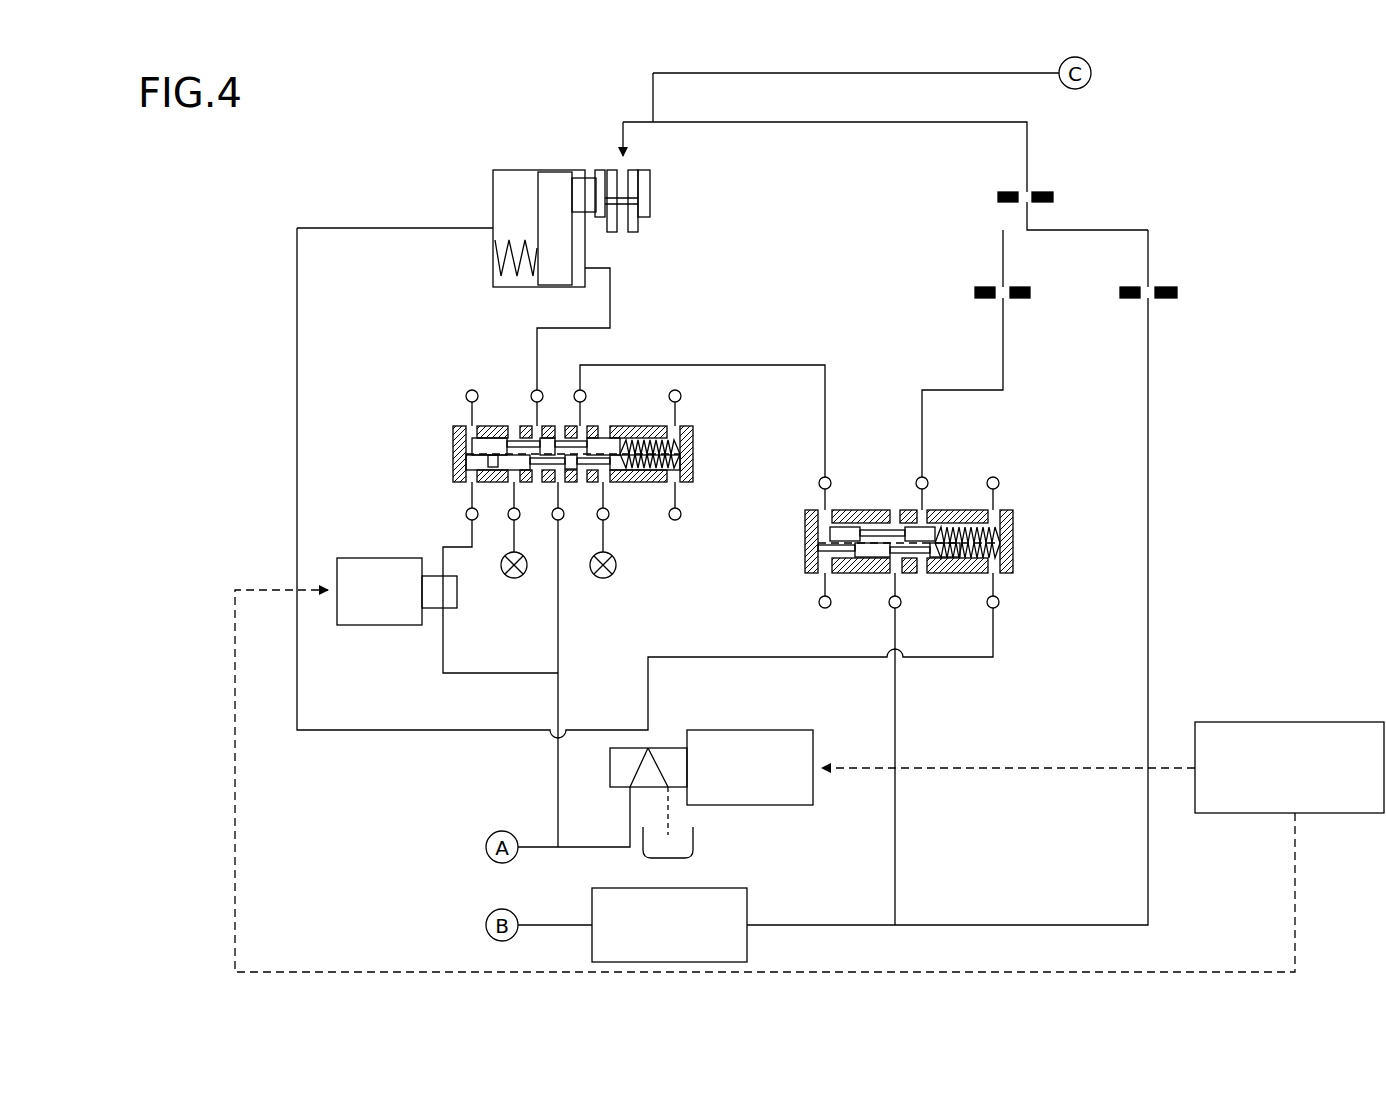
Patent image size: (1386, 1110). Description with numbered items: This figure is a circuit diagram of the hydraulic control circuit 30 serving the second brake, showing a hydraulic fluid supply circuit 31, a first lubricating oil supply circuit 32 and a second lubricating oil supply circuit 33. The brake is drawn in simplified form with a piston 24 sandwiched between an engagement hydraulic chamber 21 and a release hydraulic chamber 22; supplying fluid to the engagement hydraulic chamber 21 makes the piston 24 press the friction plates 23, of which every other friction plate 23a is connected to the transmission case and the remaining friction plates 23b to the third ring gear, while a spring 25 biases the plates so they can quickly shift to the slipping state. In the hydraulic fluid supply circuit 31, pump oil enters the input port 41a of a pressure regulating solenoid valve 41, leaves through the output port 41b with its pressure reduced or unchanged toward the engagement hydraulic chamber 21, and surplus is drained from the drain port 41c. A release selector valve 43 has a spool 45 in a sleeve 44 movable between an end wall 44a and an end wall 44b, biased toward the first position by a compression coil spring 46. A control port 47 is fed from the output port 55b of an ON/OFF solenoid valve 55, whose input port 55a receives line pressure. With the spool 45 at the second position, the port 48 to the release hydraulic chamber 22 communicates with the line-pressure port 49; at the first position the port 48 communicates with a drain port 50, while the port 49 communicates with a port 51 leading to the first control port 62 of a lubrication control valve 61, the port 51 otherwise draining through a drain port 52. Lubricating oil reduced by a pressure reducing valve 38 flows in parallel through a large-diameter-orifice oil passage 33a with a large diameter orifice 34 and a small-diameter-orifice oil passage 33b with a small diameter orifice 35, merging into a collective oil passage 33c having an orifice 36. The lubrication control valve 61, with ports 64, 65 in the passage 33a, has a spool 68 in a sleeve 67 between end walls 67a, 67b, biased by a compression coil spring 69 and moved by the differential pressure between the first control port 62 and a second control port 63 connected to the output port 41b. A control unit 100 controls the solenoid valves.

The engagement hydraulic chamber 21 is at (511, 247).
The release hydraulic chamber 22 is at (577, 282).
The friction plates 23 is at (689, 206).
The friction plates 23a is at (600, 168).
The friction plates 23b is at (610, 233).
The piston 24 is at (552, 198).
The spring 25 is at (510, 287).
The hydraulic control circuit 30 is at (361, 145).
The hydraulic fluid supply circuit 31 is at (316, 208).
The first lubricating oil supply circuit 32 is at (652, 95).
The second lubricating oil supply circuit 33 is at (932, 505).
The large-diameter-orifice oil passage 33a is at (1003, 345).
The small-diameter-orifice oil passage 33b is at (1148, 345).
The collective oil passage 33c is at (815, 122).
The large diameter orifice 34 is at (982, 285).
The small diameter orifice 35 is at (1163, 285).
The orifice 36 is at (1000, 190).
The pressure reducing valve 38 is at (750, 905).
The pressure regulating solenoid valve 41 is at (856, 778).
The input port 41a is at (630, 787).
The output port 41b is at (648, 748).
The drain port 41c is at (668, 787).
The release selector valve 43 is at (595, 588).
The sleeve 44 is at (637, 428).
The end wall 44a is at (453, 450).
The end wall 44b is at (695, 465).
The spool 45 is at (495, 440).
The compression coil spring 46 is at (700, 447).
The control port 47 is at (466, 513).
The port 48 is at (546, 391).
The port 49 is at (563, 517).
The drain port 50 is at (520, 517).
The port 51 is at (587, 393).
The drain port 52 is at (609, 517).
The ON/OFF solenoid valve 55 is at (441, 565).
The input port 55a is at (446, 612).
The output port 55b is at (446, 567).
The lubrication control valve 61 is at (916, 662).
The first control port 62 is at (821, 478).
The second control port 63 is at (998, 606).
The port 64 is at (900, 605).
The port 65 is at (928, 480).
The sleeve 67 is at (860, 510).
The end wall 67a is at (805, 548).
The end wall 67b is at (1015, 560).
The spool 68 is at (863, 573).
The compression coil spring 69 is at (1015, 530).
The control unit 100 is at (1340, 722).